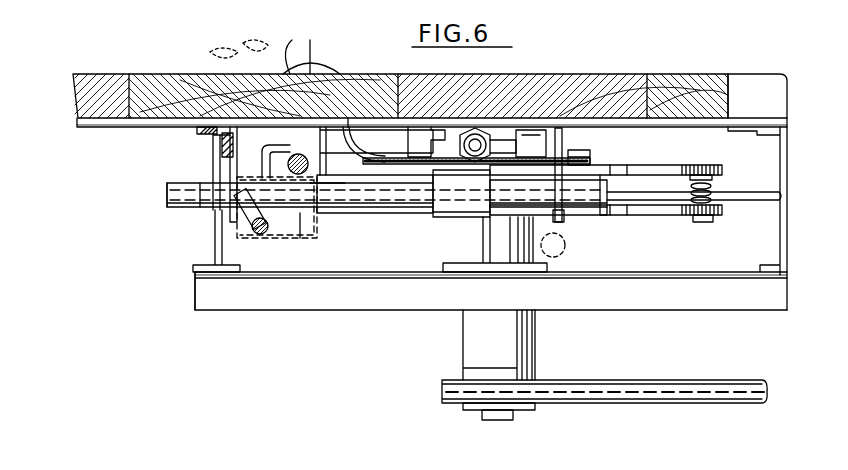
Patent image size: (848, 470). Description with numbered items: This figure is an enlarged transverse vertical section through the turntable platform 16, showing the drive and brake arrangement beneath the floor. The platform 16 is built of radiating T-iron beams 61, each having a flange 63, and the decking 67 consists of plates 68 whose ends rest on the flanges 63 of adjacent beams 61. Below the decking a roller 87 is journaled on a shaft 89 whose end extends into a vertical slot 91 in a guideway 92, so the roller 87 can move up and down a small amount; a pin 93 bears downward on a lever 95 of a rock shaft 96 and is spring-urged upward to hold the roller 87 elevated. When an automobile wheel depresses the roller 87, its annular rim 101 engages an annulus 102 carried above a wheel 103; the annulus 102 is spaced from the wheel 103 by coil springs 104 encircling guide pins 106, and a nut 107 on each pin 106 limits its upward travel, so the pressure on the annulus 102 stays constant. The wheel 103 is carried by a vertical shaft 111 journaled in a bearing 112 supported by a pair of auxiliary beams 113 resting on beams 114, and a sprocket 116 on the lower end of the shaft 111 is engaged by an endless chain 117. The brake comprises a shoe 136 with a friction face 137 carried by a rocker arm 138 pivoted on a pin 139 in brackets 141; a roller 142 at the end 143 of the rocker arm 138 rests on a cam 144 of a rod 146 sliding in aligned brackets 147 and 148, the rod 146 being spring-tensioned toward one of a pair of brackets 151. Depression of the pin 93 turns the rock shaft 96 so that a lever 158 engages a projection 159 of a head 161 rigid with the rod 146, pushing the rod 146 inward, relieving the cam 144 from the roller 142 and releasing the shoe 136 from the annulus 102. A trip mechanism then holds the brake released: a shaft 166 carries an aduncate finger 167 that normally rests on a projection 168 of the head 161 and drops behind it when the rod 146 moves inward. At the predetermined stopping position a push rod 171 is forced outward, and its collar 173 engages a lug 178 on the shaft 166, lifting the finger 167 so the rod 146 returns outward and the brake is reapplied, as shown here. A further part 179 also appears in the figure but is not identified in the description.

The turntable platform 16 is at (650, 54).
The beam 61 is at (77, 123).
The flange 63 is at (755, 118).
The decking 67 is at (356, 63).
The plate 68 is at (530, 130).
The roller 87 is at (329, 62).
The shaft 89 is at (310, 70).
The vertical slot 91 is at (268, 70).
The guideway 92 is at (245, 70).
The pin 93 is at (277, 223).
The lever 95 is at (320, 240).
The rock shaft 96 is at (252, 232).
The annular rim 101 is at (290, 70).
The annulus 102 is at (652, 165).
The wheel 103 is at (722, 216).
The coil spring 104 is at (712, 190).
The guide pin 106 is at (708, 178).
The nut 107 is at (696, 222).
The vertical shaft 111 is at (497, 420).
The bearing 112 is at (537, 350).
The auxiliary beam 113 is at (712, 312).
The beam 114 is at (214, 258).
The sprocket 116 is at (535, 410).
The endless chain 117 is at (663, 397).
The shoe 136 is at (590, 163).
The face 137 is at (392, 160).
The rocker arm 138 is at (476, 134).
The pin 139 is at (556, 245).
The bracket 141 is at (560, 128).
The roller 142 is at (495, 142).
The end 143 is at (416, 130).
The cam 144 is at (458, 178).
The rod 146 is at (607, 205).
The bracket 147 is at (563, 222).
The bracket 148 is at (232, 171).
The bracket 151 is at (498, 222).
The lever 158 is at (235, 212).
The projection 159 is at (198, 206).
The head 161 is at (250, 185).
The shaft 166 is at (304, 172).
The aduncate finger 167 is at (218, 140).
The projection 168 is at (226, 156).
The push rod 171 is at (770, 205).
The collar 173 is at (340, 184).
The lug 178 is at (277, 221).
The bent bracket 179 is at (268, 142).